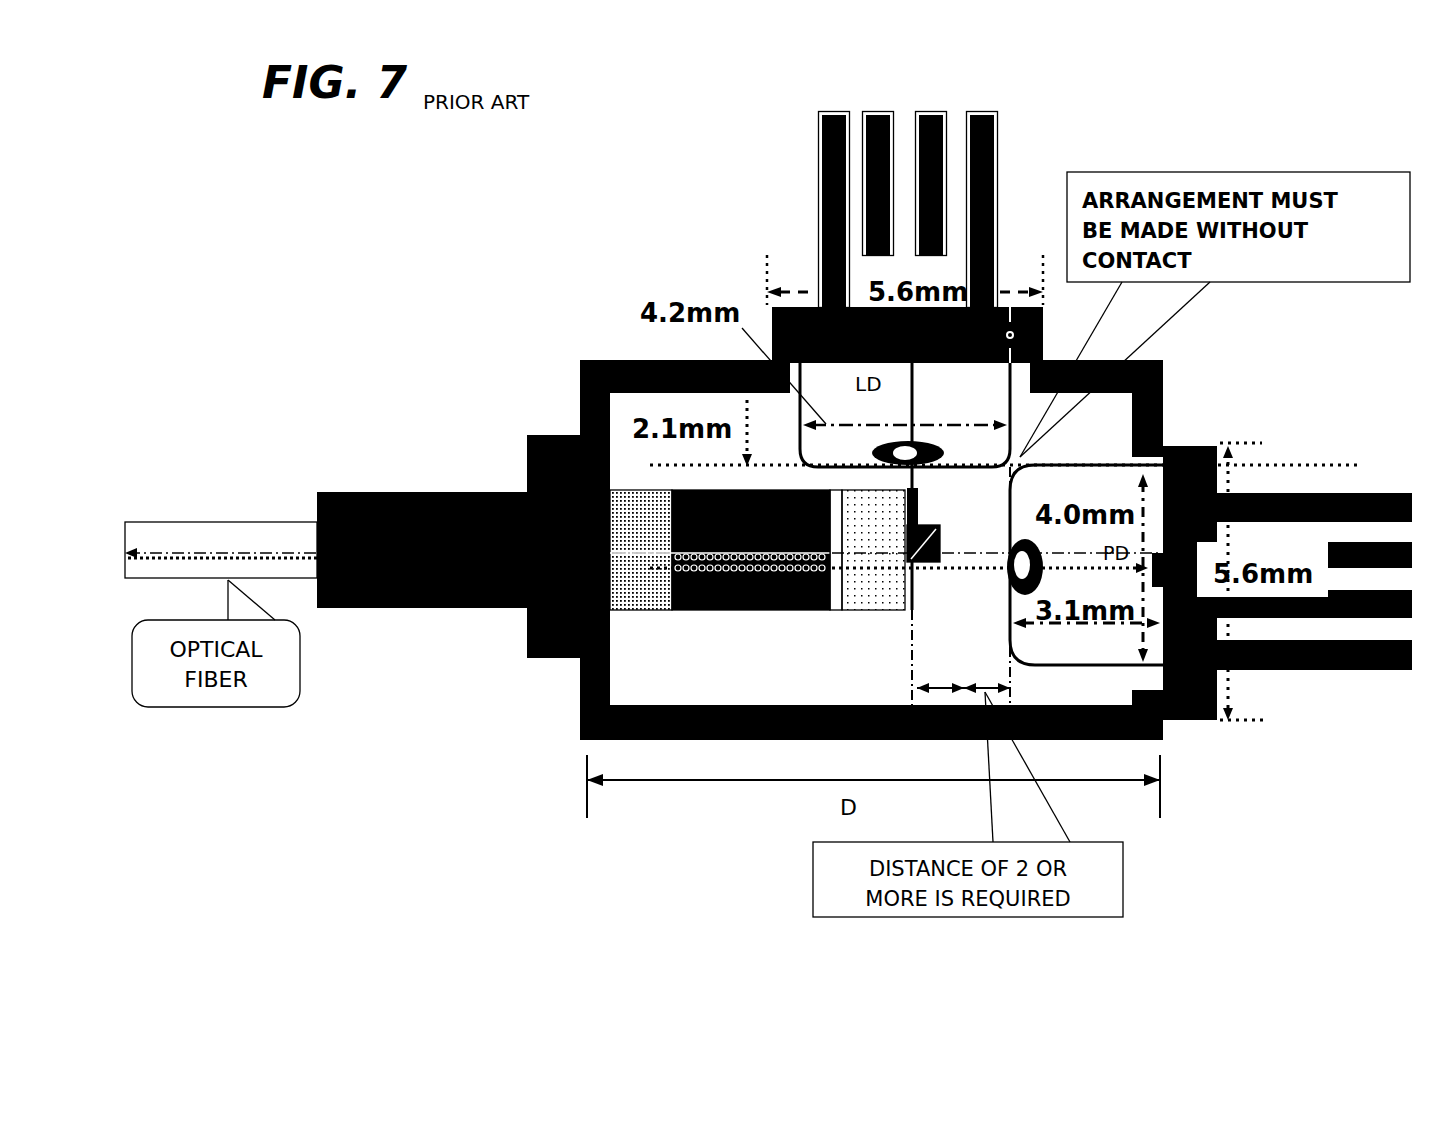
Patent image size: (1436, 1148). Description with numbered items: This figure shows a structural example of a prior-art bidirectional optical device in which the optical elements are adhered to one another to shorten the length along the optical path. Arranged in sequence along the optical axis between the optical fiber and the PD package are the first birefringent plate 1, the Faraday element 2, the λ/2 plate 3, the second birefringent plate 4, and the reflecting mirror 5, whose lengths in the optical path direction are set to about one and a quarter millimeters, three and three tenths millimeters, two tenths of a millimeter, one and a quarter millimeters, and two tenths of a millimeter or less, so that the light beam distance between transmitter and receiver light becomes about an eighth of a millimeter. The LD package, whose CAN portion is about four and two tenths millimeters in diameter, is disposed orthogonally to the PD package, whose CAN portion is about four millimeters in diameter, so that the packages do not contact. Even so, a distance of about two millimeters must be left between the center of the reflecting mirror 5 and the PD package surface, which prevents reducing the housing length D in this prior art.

The first birefringent plate 1 is at (641, 550).
The Faraday element 2 is at (720, 550).
The λ/2 plate 3 is at (838, 612).
The second birefringent plate 4 is at (873, 550).
The reflecting mirror 5 is at (928, 537).